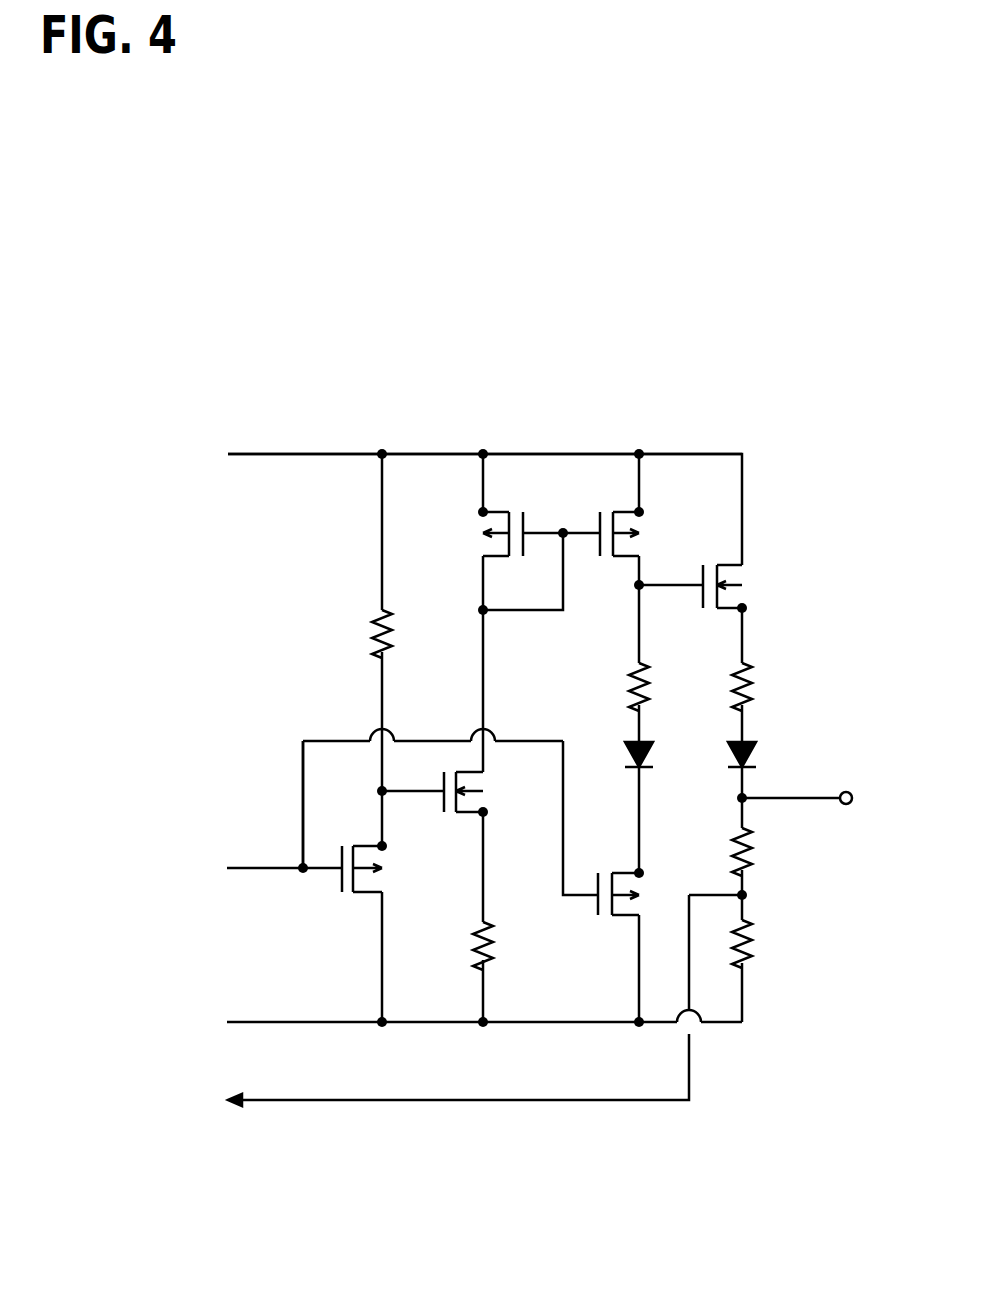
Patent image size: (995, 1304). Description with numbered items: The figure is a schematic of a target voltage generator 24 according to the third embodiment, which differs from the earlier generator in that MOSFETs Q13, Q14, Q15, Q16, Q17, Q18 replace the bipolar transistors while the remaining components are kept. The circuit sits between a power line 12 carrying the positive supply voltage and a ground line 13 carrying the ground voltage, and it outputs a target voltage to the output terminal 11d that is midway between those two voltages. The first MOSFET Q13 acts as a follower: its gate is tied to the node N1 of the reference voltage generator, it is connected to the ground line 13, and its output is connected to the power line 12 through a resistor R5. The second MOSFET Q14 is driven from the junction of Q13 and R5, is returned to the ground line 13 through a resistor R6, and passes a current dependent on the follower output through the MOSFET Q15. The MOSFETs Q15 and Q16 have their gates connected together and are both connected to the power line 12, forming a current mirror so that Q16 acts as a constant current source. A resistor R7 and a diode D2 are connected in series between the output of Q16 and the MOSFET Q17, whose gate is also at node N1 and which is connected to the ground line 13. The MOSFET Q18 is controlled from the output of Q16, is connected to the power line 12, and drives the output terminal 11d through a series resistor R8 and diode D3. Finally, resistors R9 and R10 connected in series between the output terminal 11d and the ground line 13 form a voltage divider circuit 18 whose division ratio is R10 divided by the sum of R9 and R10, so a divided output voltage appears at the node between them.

The power line 12 is at (288, 452).
The ground line 13 is at (305, 1026).
The target voltage generator 24 is at (493, 433).
The output terminal 11d is at (850, 790).
The voltage divider circuit 18 is at (805, 898).
The node N1 is at (262, 862).
The MOSFET Q13 is at (372, 883).
The MOSFET Q14 is at (470, 773).
The MOSFET Q15 is at (492, 547).
The MOSFET Q16 is at (626, 547).
The MOSFET Q17 is at (623, 913).
The MOSFET Q18 is at (735, 572).
The resistor R5 is at (370, 633).
The resistor R6 is at (495, 939).
The resistor R7 is at (648, 680).
The resistor R8 is at (751, 680).
The resistor R9 is at (751, 850).
The resistor R10 is at (751, 947).
The diode D2 is at (650, 752).
The diode D3 is at (753, 752).